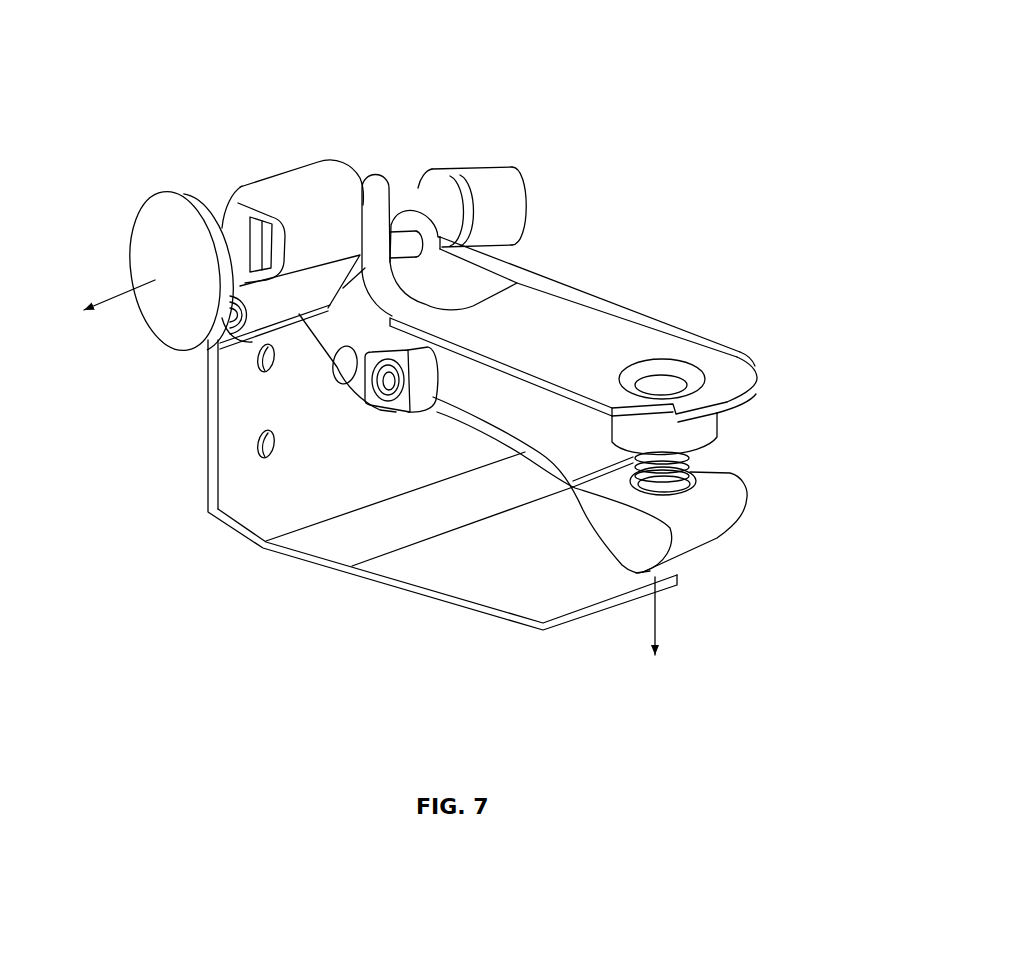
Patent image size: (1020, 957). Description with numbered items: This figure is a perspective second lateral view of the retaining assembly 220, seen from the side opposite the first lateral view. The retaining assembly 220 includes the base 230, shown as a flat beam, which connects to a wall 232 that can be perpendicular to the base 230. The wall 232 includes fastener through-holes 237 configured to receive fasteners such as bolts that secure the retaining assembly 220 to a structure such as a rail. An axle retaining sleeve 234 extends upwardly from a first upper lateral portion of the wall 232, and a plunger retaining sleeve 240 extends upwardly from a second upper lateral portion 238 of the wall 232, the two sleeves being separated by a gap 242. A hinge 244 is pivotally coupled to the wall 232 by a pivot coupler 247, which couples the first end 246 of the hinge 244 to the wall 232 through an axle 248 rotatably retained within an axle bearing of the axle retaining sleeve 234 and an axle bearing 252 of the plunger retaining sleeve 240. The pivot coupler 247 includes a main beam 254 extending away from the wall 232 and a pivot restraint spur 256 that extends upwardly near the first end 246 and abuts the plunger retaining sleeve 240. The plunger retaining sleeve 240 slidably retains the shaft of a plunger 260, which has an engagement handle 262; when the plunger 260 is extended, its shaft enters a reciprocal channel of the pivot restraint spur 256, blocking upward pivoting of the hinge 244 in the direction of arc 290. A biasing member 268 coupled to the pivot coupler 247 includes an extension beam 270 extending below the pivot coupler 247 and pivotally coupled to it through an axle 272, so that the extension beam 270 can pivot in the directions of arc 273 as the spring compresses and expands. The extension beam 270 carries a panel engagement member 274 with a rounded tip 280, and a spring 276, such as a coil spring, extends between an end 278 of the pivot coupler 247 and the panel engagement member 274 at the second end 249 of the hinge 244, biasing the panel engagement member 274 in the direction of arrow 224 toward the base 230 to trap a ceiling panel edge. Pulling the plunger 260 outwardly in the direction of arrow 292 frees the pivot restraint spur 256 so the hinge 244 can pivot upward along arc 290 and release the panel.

The retaining assembly 220 is at (451, 377).
The arrow 224 is at (660, 610).
The base 230 is at (468, 582).
The wall 232 is at (210, 497).
The axle retaining sleeve 234 is at (508, 208).
The fastener through-holes 237 is at (266, 447).
The second upper lateral portion 238 is at (205, 353).
The plunger retaining sleeve 240 is at (277, 185).
The gap 242 is at (403, 196).
The hinge 244 is at (577, 284).
The first end 246 is at (439, 206).
The pivot coupler 247 is at (613, 302).
The axle 248 is at (405, 238).
The second end 249 is at (761, 388).
The axle bearing 252 is at (253, 333).
The main beam 254 is at (640, 338).
The pivot restraint spur 256 is at (368, 180).
The plunger 260 is at (124, 220).
The engagement handle 262 is at (130, 278).
The biasing member 268 is at (717, 462).
The extension beam 270 is at (503, 451).
The axle 272 is at (385, 382).
The arc 273 is at (422, 368).
The panel engagement member 274 is at (672, 556).
The spring 276 is at (735, 490).
The end 278 is at (735, 361).
The rounded tip 280 is at (708, 540).
The arc 290 is at (451, 341).
The arrow 292 is at (108, 303).